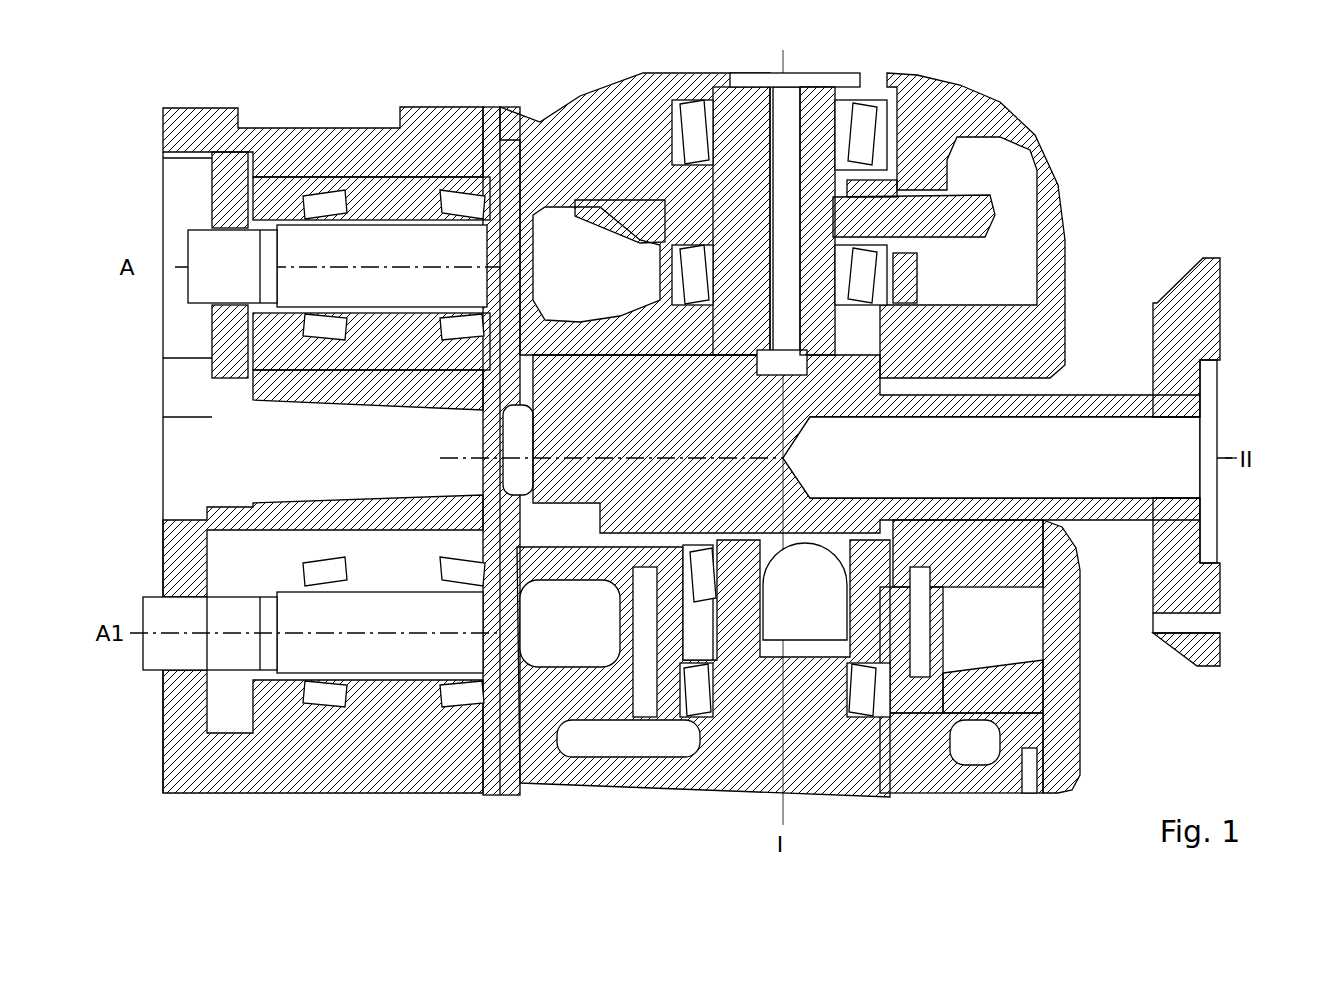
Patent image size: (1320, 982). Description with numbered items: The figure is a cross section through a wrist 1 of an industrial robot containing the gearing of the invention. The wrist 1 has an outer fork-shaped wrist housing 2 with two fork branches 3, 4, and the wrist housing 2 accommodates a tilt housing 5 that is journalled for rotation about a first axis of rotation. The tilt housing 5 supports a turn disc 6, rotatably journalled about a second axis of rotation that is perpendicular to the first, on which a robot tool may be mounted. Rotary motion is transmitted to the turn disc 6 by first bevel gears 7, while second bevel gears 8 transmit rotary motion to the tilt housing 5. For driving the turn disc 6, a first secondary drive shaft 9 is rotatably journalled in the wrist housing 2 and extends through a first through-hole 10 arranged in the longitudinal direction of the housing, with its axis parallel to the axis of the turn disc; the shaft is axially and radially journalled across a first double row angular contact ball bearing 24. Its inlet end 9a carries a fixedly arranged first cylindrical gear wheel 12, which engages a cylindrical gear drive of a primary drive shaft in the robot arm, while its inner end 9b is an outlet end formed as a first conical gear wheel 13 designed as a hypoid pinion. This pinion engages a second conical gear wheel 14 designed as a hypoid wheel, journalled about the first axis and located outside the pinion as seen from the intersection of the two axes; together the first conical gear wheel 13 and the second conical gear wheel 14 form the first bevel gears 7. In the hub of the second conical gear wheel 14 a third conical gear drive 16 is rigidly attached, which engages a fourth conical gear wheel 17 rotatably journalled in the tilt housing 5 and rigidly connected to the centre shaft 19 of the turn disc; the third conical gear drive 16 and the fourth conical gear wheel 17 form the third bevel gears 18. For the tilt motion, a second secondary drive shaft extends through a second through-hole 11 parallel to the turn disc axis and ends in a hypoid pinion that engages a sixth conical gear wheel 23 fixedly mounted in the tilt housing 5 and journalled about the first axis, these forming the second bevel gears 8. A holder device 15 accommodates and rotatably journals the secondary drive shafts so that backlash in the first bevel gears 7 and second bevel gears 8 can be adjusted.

The wrist 1 is at (1140, 130).
The wrist housing 2 is at (525, 148).
The fork branch 3 is at (917, 105).
The fork branch 4 is at (1008, 760).
The tilt housing 5 is at (745, 480).
The turn disc 6 is at (1212, 620).
The first bevel gears 7 is at (602, 235).
The second bevel gears 8 is at (536, 785).
The first secondary drive shaft 9 is at (398, 240).
The inlet end 9a is at (225, 250).
The inner end 9b is at (712, 335).
The first through-hole 10 is at (452, 178).
The second through-hole 11 is at (353, 712).
The first cylindrical gear wheel 12 is at (232, 158).
The first conical gear wheel 13 is at (620, 262).
The second conical gear wheel 14 is at (965, 200).
The holder device 15 is at (312, 195).
The third conical gear drive 16 is at (920, 330).
The fourth conical gear wheel 17 is at (643, 478).
The third bevel gears 18 is at (752, 345).
The centre shaft 19 is at (625, 560).
The sixth conical gear wheel 23 is at (960, 700).
The first double row angular contact ball bearing 24 is at (440, 185).